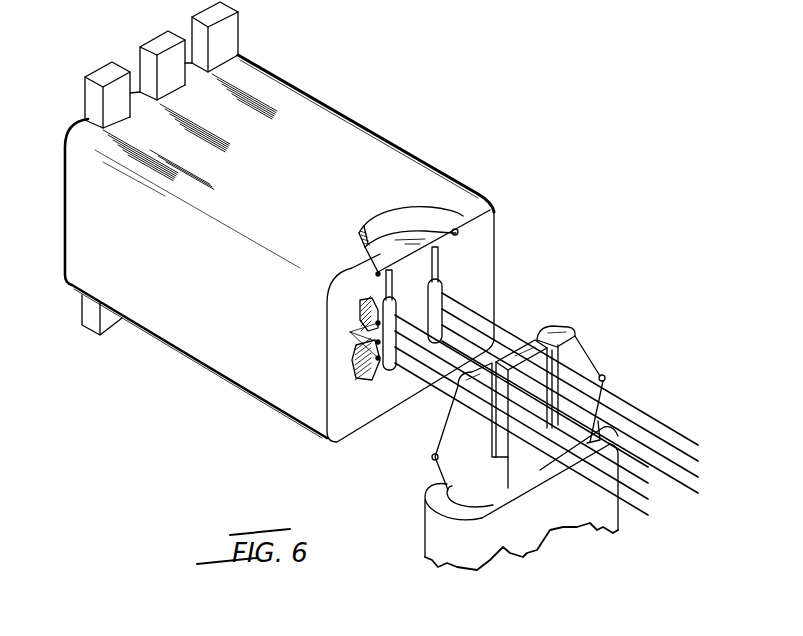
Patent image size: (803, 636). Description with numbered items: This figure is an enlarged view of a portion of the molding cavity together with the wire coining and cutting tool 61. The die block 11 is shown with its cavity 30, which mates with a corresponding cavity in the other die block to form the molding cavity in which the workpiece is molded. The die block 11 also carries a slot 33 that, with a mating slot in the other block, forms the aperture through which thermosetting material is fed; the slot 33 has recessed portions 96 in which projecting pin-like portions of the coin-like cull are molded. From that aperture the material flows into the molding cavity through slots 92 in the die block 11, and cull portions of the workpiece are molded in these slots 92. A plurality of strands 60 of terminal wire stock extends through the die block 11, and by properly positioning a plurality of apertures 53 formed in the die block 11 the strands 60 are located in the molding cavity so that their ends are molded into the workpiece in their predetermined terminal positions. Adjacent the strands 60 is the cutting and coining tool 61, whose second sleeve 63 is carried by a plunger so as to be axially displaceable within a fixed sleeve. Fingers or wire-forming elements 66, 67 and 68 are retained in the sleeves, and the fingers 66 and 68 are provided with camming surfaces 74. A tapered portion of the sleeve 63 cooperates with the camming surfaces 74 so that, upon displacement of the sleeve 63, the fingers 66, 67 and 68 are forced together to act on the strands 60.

The die block 11 is at (390, 144).
The slot 33 is at (389, 212).
The recessed portions 96 is at (464, 232).
The slots 92 is at (391, 280).
The cavity 30 is at (396, 310).
The apertures 53 is at (343, 336).
The strands of terminal wire stock 60 is at (413, 381).
The finger 66 is at (452, 405).
The finger 67 is at (525, 343).
The finger 68 is at (572, 328).
The camming surfaces 74 is at (432, 456).
The cutting and coining tool 61 is at (422, 503).
The second sleeve 63 is at (455, 570).